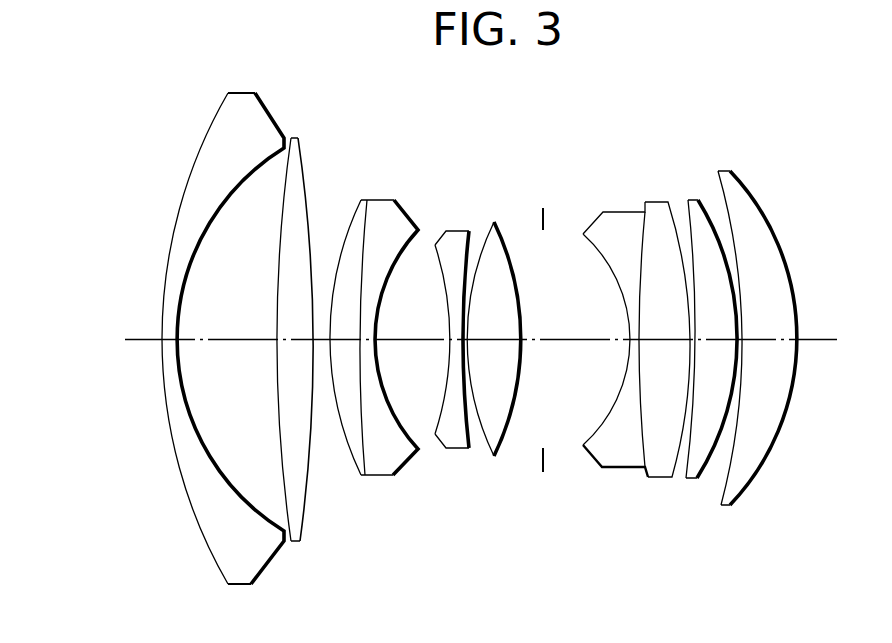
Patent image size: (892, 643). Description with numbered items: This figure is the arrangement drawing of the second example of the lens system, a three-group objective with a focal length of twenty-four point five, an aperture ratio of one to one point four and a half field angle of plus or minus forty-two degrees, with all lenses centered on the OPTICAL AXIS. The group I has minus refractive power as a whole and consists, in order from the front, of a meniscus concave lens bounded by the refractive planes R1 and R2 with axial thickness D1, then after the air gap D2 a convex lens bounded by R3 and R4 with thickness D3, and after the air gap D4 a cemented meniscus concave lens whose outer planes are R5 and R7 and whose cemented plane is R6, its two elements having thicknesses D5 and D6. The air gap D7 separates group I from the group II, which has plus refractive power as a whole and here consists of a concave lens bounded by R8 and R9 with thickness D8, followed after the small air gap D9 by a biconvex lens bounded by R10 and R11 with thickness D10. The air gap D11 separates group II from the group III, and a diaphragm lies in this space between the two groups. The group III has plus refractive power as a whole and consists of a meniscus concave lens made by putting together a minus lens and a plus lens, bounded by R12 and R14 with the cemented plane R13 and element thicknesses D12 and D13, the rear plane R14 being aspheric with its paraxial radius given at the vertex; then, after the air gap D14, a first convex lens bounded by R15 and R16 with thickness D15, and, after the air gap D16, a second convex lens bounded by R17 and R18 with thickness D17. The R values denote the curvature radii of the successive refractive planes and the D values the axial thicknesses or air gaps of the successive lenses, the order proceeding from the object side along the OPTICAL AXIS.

The group I is at (212, 82).
The group II is at (435, 198).
The group III is at (587, 163).
The curvature radius of first refractive plane R1 is at (220, 572).
The curvature radius of second refractive plane R2 is at (272, 525).
The curvature radius of third refractive plane R3 is at (293, 535).
The curvature radius of fourth refractive plane R4 is at (302, 535).
The curvature radius of fifth refractive plane R5 is at (357, 470).
The curvature radius of sixth refractive plane R6 is at (366, 477).
The curvature radius of seventh refractive plane R7 is at (407, 445).
The curvature radius of eighth refractive plane R8 is at (437, 440).
The curvature radius of ninth refractive plane R9 is at (460, 448).
The curvature radius of tenth refractive plane R10 is at (482, 452).
The curvature radius of eleventh refractive plane R11 is at (500, 456).
The curvature radius of twelfth refractive plane R12 is at (588, 458).
The curvature radius of thirteenth refractive plane R13 is at (642, 452).
The curvature radius of fourteenth refractive plane R14 is at (670, 463).
The curvature radius of fifteenth refractive plane R15 is at (687, 463).
The curvature radius of sixteenth refractive plane R16 is at (708, 470).
The curvature radius of seventeenth refractive plane R17 is at (727, 483).
The curvature radius of eighteenth refractive plane R18 is at (743, 497).
The axial thickness of first lens D1 is at (172, 338).
The first air gap D2 is at (227, 325).
The axial thickness of second lens D3 is at (291, 325).
The second air gap D4 is at (322, 338).
The axial thickness of third lens element D5 is at (343, 325).
The axial thickness of fourth lens element D6 is at (378, 338).
The air gap between group I and group II D7 is at (414, 325).
The axial thickness of concave lens of group II D8 is at (460, 337).
The air gap within group II D9 is at (468, 327).
The axial thickness of biconvex lens of group II D10 is at (497, 325).
The air gap between group II and group III D11 is at (567, 325).
The axial thickness of minus lens of group III D12 is at (633, 337).
The axial thickness of plus lens of group III D13 is at (666, 325).
The air gap after cemented lens of group III D14 is at (693, 323).
The axial thickness of first convex lens of group III D15 is at (721, 325).
The air gap between convex lenses of group III D16 is at (742, 315).
The axial thickness of last convex lens of group III D17 is at (769, 325).
The optical axis OPTICAL AXIS is at (145, 338).